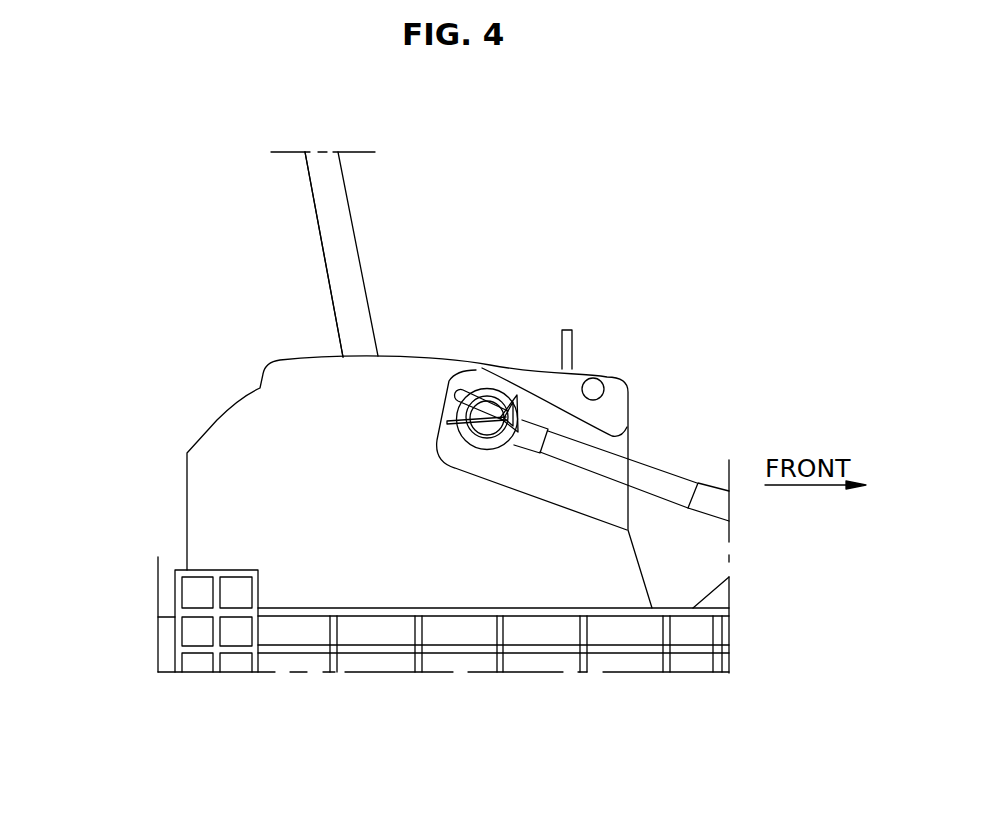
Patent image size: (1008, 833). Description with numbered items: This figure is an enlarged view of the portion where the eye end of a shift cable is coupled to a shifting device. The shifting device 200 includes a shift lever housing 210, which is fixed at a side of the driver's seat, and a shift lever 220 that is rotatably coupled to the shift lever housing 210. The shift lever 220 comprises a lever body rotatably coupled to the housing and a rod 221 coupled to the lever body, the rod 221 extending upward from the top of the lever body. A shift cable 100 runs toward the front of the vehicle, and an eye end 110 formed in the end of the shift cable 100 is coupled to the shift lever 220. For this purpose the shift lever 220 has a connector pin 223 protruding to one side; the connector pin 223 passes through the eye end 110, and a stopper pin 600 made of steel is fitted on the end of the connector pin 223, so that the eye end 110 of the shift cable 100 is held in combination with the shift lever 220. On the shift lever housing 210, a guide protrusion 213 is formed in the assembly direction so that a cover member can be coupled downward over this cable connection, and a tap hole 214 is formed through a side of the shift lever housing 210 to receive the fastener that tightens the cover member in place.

The shift cable 100 is at (665, 482).
The eye end 110 is at (502, 443).
The shifting device 200 is at (172, 523).
The shift lever housing 210 is at (292, 585).
The guide protrusion 213 is at (570, 328).
The tap hole 214 is at (592, 384).
The shift lever 220 is at (302, 198).
The rod 221 is at (338, 257).
The connector pin 223 is at (487, 426).
The stopper pin 600 is at (513, 397).